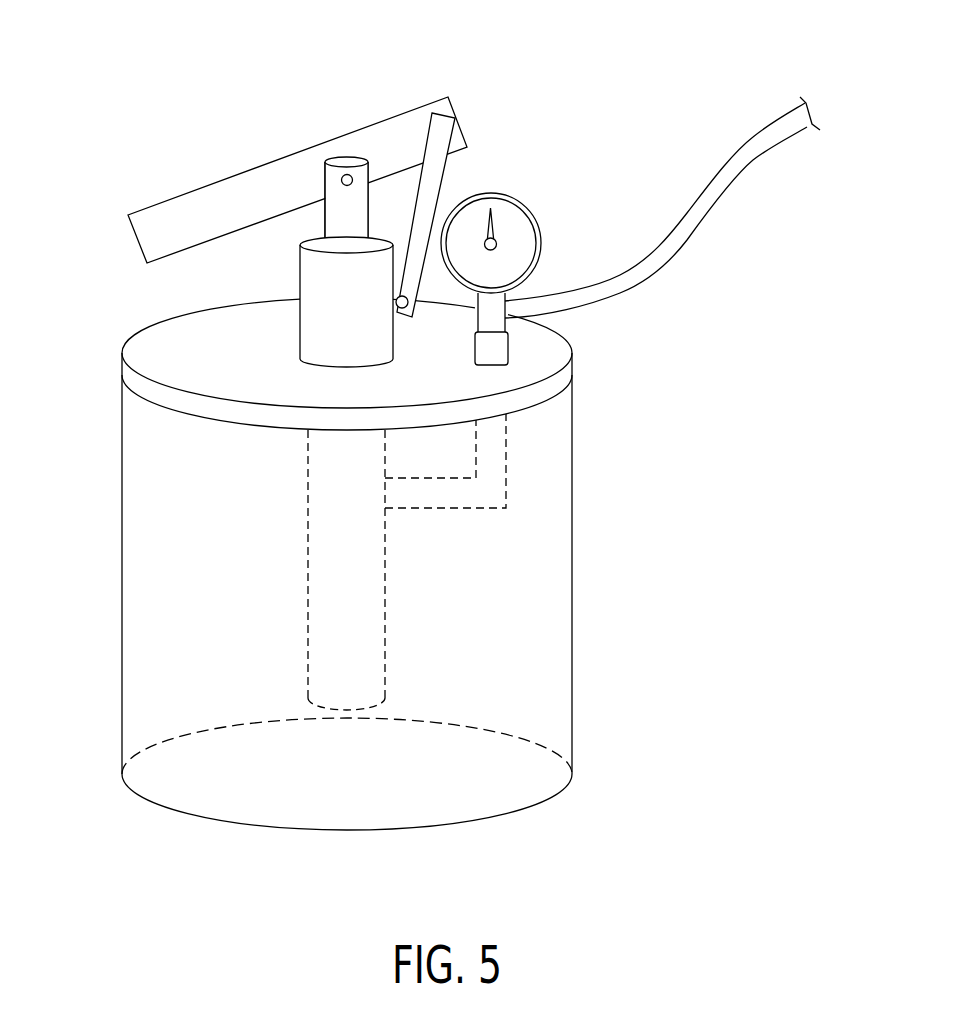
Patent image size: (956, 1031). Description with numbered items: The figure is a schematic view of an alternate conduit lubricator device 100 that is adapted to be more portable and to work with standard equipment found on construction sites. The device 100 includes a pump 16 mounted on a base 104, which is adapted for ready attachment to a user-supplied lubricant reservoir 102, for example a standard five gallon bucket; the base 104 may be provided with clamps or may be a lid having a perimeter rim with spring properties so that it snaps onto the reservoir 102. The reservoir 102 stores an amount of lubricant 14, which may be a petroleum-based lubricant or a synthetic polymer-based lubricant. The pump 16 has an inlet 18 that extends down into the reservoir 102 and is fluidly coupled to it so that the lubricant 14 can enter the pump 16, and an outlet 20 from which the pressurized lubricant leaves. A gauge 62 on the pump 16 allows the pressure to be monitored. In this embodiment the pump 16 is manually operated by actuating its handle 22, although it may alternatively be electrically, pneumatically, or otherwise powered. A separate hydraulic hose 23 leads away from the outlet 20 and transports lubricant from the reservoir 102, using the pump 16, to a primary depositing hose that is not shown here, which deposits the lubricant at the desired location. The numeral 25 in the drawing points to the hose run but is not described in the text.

The conduit lubricator device 100 is at (616, 40).
The lubricant 14 is at (145, 657).
The reservoir 102 is at (572, 637).
The base 104 is at (122, 373).
The inlet 18 is at (375, 632).
The pump 16 is at (328, 80).
The handle 22 is at (195, 202).
The gauge 62 is at (490, 193).
The outlet 20 is at (518, 310).
The hose 25 is at (644, 294).
The hydraulic hose 23 is at (807, 141).